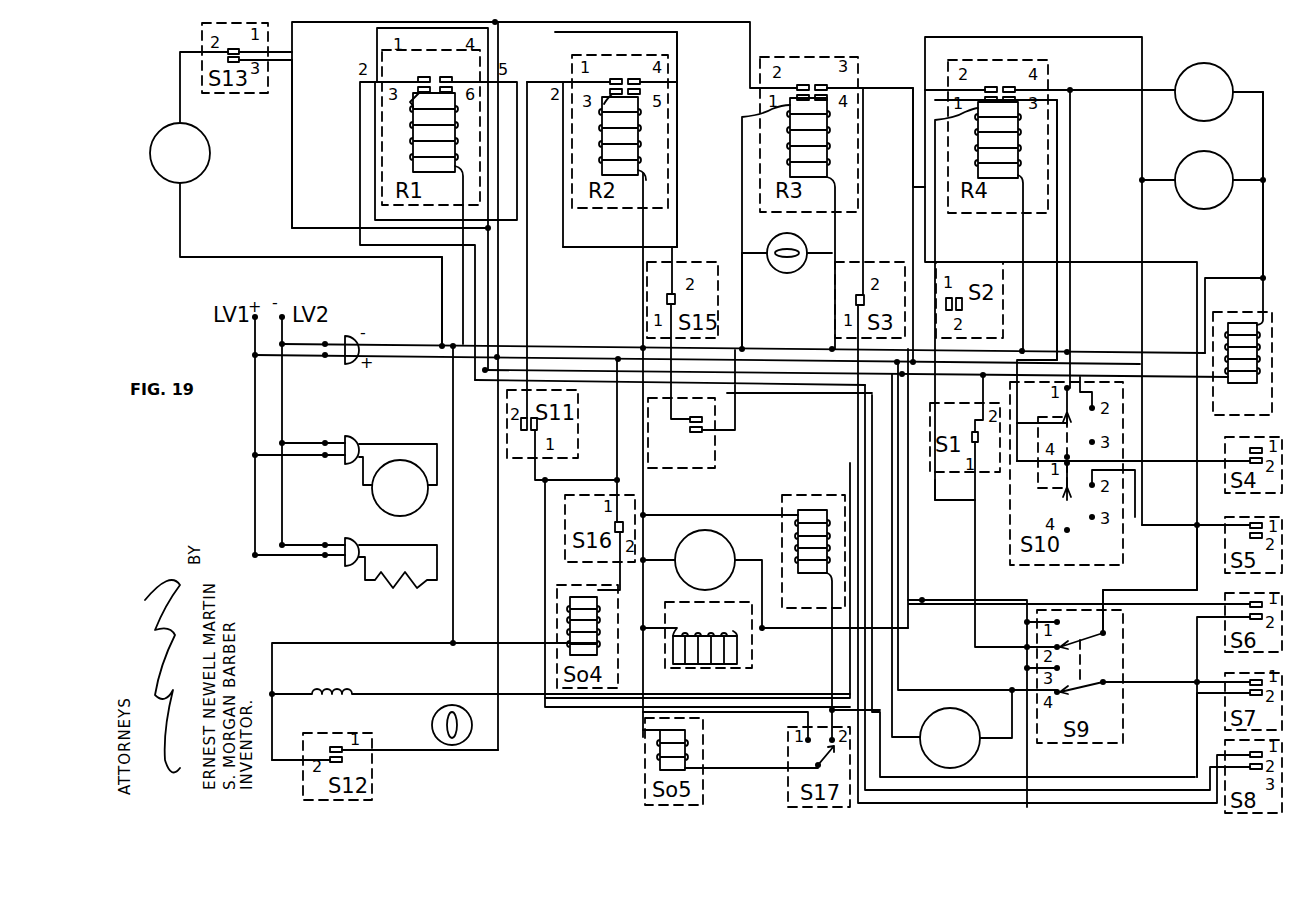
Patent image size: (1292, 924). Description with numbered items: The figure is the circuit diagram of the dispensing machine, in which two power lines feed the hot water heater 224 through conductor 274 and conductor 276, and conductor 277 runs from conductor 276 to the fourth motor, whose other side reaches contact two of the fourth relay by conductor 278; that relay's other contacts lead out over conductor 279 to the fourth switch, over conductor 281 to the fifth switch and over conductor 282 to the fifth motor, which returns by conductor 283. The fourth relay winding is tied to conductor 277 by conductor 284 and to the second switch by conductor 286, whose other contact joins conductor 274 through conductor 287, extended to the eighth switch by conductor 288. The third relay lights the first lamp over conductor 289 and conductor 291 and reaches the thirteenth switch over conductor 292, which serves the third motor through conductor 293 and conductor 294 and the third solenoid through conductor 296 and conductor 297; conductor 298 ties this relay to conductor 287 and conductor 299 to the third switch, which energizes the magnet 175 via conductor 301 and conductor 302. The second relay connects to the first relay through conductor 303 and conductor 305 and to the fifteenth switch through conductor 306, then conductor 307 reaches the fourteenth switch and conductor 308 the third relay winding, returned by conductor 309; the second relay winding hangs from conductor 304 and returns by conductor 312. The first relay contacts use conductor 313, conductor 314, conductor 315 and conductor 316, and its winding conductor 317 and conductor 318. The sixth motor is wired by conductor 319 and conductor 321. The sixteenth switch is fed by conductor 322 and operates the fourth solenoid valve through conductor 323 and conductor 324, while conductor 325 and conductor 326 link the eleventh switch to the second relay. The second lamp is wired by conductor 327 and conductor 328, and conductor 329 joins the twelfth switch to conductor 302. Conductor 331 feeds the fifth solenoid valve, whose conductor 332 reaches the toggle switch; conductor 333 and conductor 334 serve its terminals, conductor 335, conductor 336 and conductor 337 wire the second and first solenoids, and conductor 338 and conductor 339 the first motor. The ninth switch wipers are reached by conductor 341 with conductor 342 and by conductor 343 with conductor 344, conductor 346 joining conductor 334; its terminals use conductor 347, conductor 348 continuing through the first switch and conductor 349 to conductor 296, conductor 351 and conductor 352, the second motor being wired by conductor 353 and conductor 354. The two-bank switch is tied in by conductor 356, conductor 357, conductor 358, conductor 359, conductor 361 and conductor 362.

The magnet 175 is at (337, 682).
The hot water heater 224 is at (378, 598).
The conductor 274 is at (240, 509).
The conductor 276 is at (286, 417).
The conductor 277 is at (1252, 230).
The conductor 278 is at (1019, 51).
The conductor 279 is at (909, 186).
The conductor 281 is at (1072, 123).
The conductor 282 is at (1072, 80).
The conductor 283 is at (1244, 145).
The conductor 284 is at (1015, 242).
The conductor 286 is at (951, 250).
The conductor 287 is at (416, 362).
The conductor 288 is at (984, 594).
The conductor 289 is at (742, 160).
The conductor 291 is at (756, 318).
The conductor 292 is at (550, 32).
The conductor 293 is at (156, 94).
The conductor 294 is at (176, 209).
The conductor 296 is at (298, 110).
The conductor 297 is at (1252, 300).
The conductor 298 is at (872, 80).
The conductor 299 is at (864, 252).
The conductor 301 is at (392, 703).
The conductor 302 is at (447, 399).
The conductor 303 is at (537, 221).
The conductor 304 is at (691, 236).
The conductor 305 is at (367, 50).
The conductor 306 is at (682, 112).
The conductor 307 is at (654, 392).
The conductor 308 is at (729, 218).
The conductor 309 is at (826, 252).
The conductor 312 is at (644, 234).
The conductor 313 is at (354, 158).
The conductor 314 is at (480, 48).
The conductor 315 is at (537, 136).
The conductor 316 is at (537, 176).
The conductor 317 is at (404, 116).
The conductor 318 is at (443, 282).
The conductor 319 is at (384, 439).
The conductor 321 is at (362, 483).
The conductor 322 is at (606, 446).
The conductor 323 is at (609, 580).
The conductor 324 is at (478, 644).
The conductor 325 is at (543, 487).
The conductor 326 is at (529, 328).
The conductor 327 is at (430, 768).
The conductor 328 is at (514, 741).
The conductor 329 is at (292, 733).
The conductor 331 is at (647, 503).
The conductor 332 is at (762, 778).
The conductor 333 is at (534, 608).
The conductor 334 is at (819, 675).
The conductor 335 is at (717, 512).
The conductor 336 is at (663, 602).
The conductor 337 is at (923, 593).
The conductor 338 is at (658, 552).
The conductor 339 is at (758, 558).
The conductor 341 is at (1187, 576).
The conductor 342 is at (1184, 522).
The conductor 343 is at (1192, 676).
The conductor 344 is at (1204, 678).
The conductor 346 is at (1188, 750).
The conductor 347 is at (1021, 628).
The conductor 348 is at (935, 528).
The conductor 349 is at (972, 398).
The conductor 351 is at (1016, 664).
The conductor 352 is at (907, 673).
The conductor 353 is at (993, 734).
The conductor 354 is at (906, 734).
The conductor 356 is at (1036, 426).
The conductor 357 is at (1079, 243).
The conductor 358 is at (1085, 381).
The conductor 359 is at (967, 500).
The conductor 361 is at (1134, 208).
The conductor 362 is at (1147, 517).